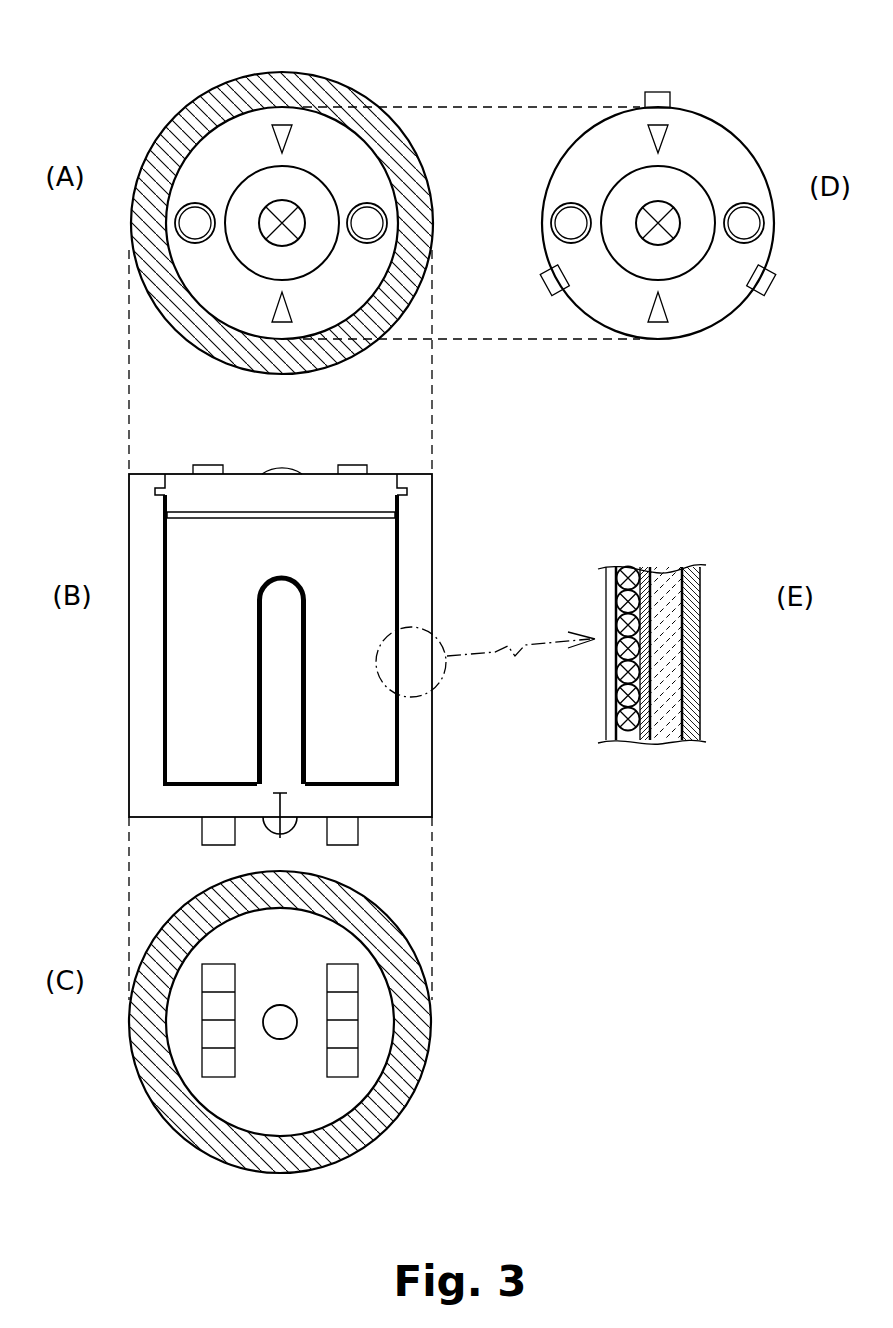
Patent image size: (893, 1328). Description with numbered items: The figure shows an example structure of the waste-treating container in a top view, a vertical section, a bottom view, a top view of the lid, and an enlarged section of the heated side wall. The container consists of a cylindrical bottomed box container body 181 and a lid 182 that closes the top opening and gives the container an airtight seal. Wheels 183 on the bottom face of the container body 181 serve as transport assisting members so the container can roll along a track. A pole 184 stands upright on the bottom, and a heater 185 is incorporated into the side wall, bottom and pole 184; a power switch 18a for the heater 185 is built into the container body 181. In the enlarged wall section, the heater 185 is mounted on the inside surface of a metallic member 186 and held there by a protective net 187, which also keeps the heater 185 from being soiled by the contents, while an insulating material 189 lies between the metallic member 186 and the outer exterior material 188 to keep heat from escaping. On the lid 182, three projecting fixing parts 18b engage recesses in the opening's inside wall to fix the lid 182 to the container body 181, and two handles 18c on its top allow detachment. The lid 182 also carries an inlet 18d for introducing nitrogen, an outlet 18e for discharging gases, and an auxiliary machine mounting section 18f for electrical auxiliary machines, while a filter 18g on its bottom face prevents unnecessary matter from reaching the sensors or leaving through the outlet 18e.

The container body 181 is at (377, 123).
The lid 182 is at (318, 150).
The power switch 18a is at (290, 800).
The fixing parts 18b is at (545, 292).
The handles 18c is at (655, 318).
The inlet 18d is at (572, 200).
The outlet 18e is at (745, 200).
The auxiliary machine mounting section 18f is at (693, 258).
The filter 18g is at (370, 515).
The wheels 183 is at (350, 835).
The pole 184 is at (273, 623).
The heater 185 is at (633, 737).
The metallic member 186 is at (651, 737).
The protective net 187 is at (606, 693).
The exterior material 188 is at (700, 744).
The insulating material 189 is at (674, 735).